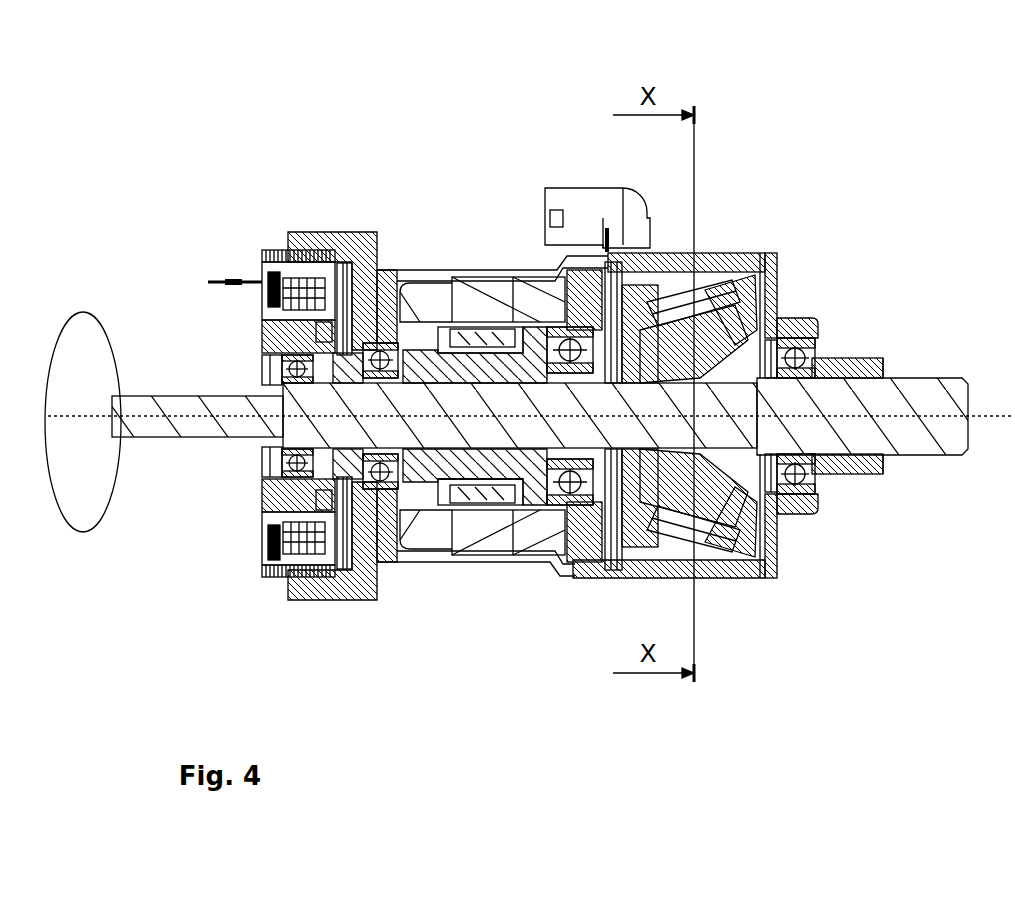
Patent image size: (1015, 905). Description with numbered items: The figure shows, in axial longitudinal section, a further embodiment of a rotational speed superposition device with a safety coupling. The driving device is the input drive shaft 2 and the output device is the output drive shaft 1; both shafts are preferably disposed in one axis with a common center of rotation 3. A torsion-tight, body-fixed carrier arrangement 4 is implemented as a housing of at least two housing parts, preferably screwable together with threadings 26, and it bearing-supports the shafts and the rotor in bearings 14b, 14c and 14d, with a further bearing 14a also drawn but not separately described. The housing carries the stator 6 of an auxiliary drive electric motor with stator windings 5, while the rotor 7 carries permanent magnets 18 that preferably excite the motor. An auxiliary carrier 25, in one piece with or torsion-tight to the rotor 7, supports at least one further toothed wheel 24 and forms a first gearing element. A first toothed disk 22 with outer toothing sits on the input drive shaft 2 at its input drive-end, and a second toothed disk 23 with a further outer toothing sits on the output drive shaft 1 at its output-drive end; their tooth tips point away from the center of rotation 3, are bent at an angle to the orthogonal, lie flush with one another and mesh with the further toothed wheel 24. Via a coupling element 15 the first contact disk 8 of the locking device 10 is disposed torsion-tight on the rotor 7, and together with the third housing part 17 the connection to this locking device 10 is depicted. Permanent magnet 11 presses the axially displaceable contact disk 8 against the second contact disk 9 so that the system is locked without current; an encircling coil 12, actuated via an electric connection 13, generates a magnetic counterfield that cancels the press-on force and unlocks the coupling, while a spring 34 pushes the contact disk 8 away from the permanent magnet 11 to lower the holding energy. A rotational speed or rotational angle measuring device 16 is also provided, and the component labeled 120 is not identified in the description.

The output drive shaft 1 is at (870, 398).
The input drive shaft 2 is at (175, 408).
The center of rotation 3 is at (905, 416).
The carrier arrangement 4 is at (423, 275).
The stator windings 5 is at (447, 303).
The stator 6 is at (493, 307).
The rotor 7 is at (420, 452).
The first contact disk 8 is at (343, 545).
The second contact disk 9 is at (330, 528).
The locking device 10 is at (250, 232).
The permanent magnet 11 is at (270, 272).
The coil 12 is at (303, 295).
The electric connection 13 is at (230, 279).
The bearing 14a is at (290, 478).
The bearing 14b is at (393, 482).
The bearing 14c is at (560, 503).
The bearing 14d is at (794, 496).
The coupling element 15 is at (348, 467).
The rotational speed or rotational angle measuring device 16 is at (587, 208).
The third housing part 17 is at (273, 567).
The permanent magnets 18 is at (488, 478).
The first toothed disk 22 is at (748, 253).
The second toothed disk 23 is at (776, 258).
The further toothed wheel 24 is at (710, 282).
The auxiliary carrier 25 is at (660, 483).
The threadings 26 is at (653, 347).
The spring 34 is at (333, 338).
The steering wheel 120 is at (78, 533).